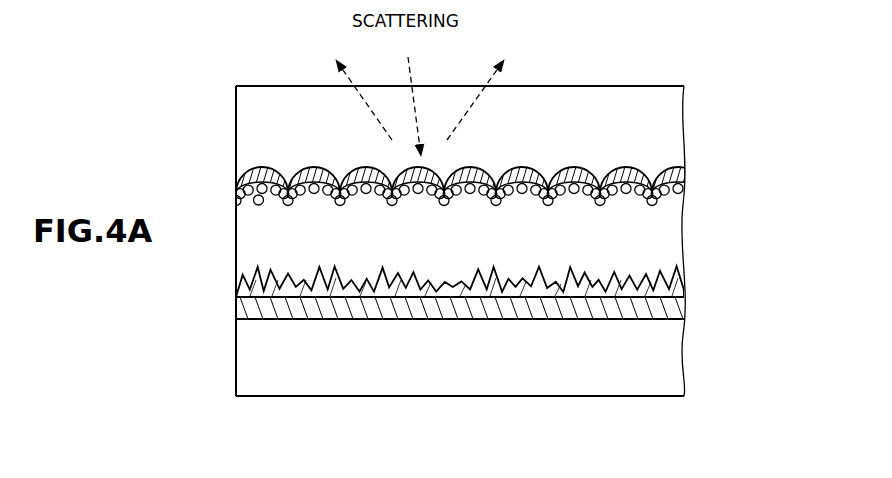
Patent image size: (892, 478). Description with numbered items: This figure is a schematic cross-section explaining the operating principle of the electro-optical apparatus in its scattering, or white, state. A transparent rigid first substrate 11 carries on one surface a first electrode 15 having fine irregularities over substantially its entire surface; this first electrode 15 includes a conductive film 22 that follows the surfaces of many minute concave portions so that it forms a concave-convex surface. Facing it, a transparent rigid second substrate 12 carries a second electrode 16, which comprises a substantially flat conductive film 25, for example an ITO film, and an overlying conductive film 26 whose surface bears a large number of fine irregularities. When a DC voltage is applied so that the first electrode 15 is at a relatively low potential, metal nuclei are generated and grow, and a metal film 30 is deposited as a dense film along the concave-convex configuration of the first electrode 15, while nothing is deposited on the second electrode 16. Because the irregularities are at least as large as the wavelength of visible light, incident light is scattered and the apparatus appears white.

The first substrate 11 is at (678, 117).
The second substrate 12 is at (677, 361).
The first electrode 15 is at (508, 182).
The second electrode 16 is at (510, 293).
The conductive film 22 is at (676, 172).
The conductive film 25 is at (677, 309).
The conductive film 26 is at (677, 283).
The metal film 30 is at (258, 209).